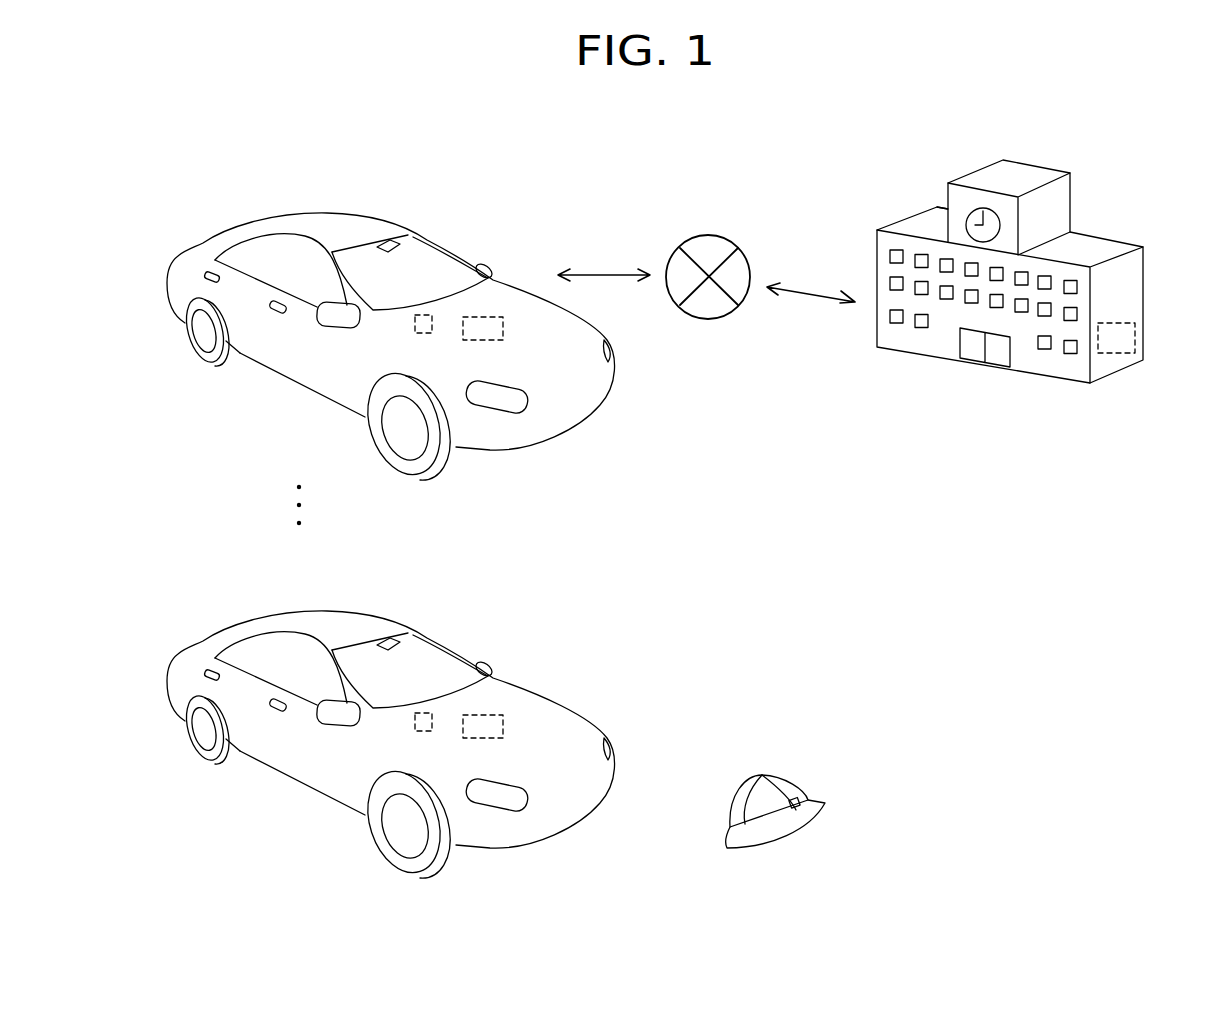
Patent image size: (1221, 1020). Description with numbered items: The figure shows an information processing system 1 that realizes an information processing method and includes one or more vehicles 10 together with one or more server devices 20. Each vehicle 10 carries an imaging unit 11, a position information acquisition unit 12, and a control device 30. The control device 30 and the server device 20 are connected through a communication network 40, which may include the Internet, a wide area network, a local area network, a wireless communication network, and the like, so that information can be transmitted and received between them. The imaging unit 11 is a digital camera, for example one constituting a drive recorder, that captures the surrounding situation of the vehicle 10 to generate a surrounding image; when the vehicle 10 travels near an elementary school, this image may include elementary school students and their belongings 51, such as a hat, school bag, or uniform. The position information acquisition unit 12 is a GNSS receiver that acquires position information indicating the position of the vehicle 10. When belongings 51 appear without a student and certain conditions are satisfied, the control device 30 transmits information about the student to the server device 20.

The information processing system 1 is at (1144, 160).
The vehicle 10 is at (260, 216).
The imaging unit 11 is at (403, 238).
The position information acquisition unit 12 is at (423, 333).
The control device 30 is at (480, 340).
The communication network 40 is at (709, 235).
The server device 20 is at (1113, 353).
The belongings 51 is at (750, 855).